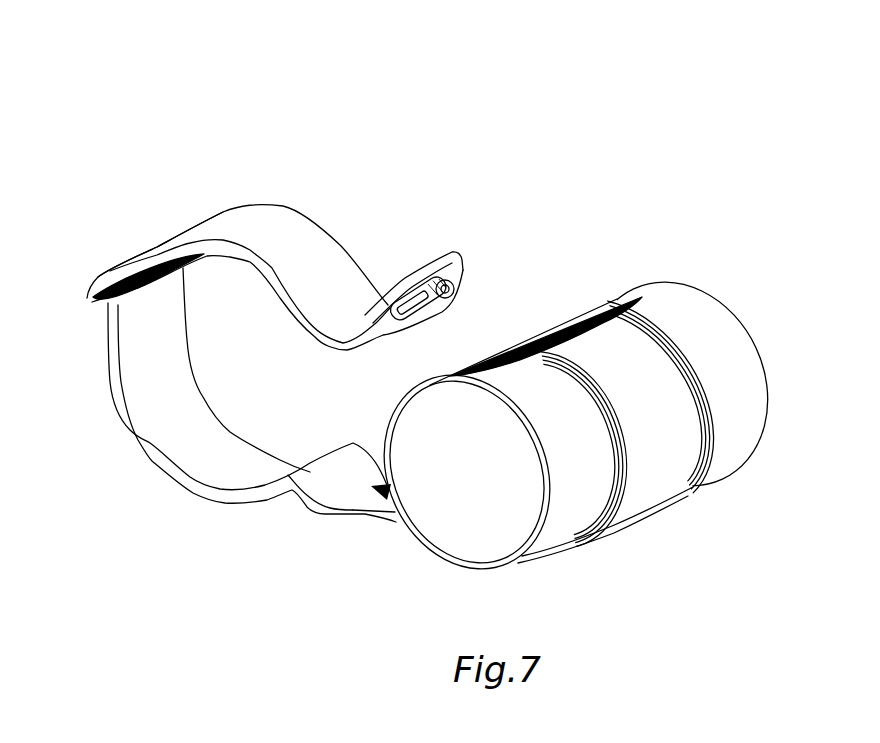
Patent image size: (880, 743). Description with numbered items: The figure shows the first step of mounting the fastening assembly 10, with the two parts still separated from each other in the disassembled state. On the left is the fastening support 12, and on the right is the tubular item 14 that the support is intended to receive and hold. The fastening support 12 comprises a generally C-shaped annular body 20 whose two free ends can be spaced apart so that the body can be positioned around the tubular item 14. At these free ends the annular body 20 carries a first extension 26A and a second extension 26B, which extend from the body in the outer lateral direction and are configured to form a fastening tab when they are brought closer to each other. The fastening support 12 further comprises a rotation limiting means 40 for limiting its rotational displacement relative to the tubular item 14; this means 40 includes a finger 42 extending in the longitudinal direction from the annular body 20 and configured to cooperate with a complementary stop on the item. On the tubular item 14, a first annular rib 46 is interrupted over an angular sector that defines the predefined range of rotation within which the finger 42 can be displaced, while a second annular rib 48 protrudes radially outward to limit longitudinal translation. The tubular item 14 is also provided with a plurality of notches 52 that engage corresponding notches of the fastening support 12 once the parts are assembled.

The fastening assembly 10 is at (487, 146).
The fastening support 12 is at (229, 204).
The tubular item 14 is at (487, 514).
The annular body 20 is at (207, 433).
The first extension 26A is at (455, 255).
The second extension 26B is at (333, 511).
The rotation limiting means 40 is at (145, 296).
The finger 42 is at (122, 267).
The first annular rib 46 is at (604, 380).
The second annular rib 48 is at (677, 325).
The notches 52 is at (527, 337).